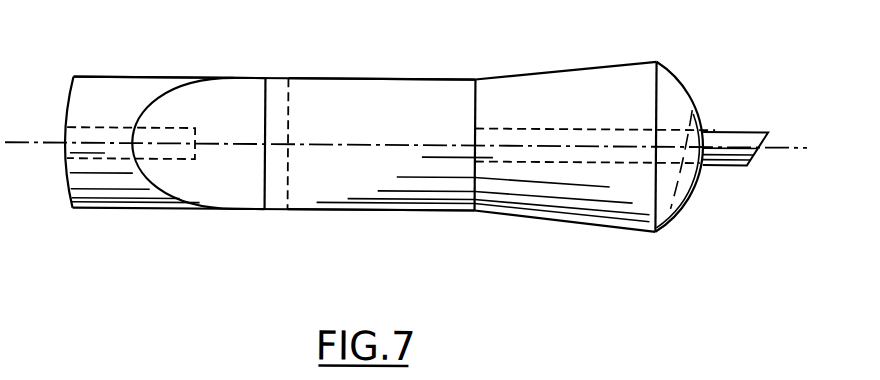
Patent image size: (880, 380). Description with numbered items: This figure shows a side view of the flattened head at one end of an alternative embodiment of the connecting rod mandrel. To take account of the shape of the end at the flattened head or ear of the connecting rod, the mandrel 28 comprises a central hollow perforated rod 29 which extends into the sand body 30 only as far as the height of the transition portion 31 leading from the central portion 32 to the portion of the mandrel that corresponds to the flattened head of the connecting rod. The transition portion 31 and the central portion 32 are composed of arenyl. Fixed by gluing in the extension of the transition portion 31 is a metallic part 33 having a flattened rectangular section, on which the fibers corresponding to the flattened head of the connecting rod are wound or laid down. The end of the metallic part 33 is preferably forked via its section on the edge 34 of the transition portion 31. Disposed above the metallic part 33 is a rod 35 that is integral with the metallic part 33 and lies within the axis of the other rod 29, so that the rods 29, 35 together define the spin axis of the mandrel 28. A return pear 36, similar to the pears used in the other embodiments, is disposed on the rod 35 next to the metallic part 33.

The mandrel 28 is at (208, 218).
The central hollow perforated rod 29 is at (105, 137).
The sand body 30 is at (155, 91).
The transition portion 31 is at (222, 104).
The central portion 32 is at (133, 79).
The metallic part 33 is at (373, 173).
The edge 34 is at (288, 105).
The rod 35 is at (742, 143).
The return pear 36 is at (571, 191).